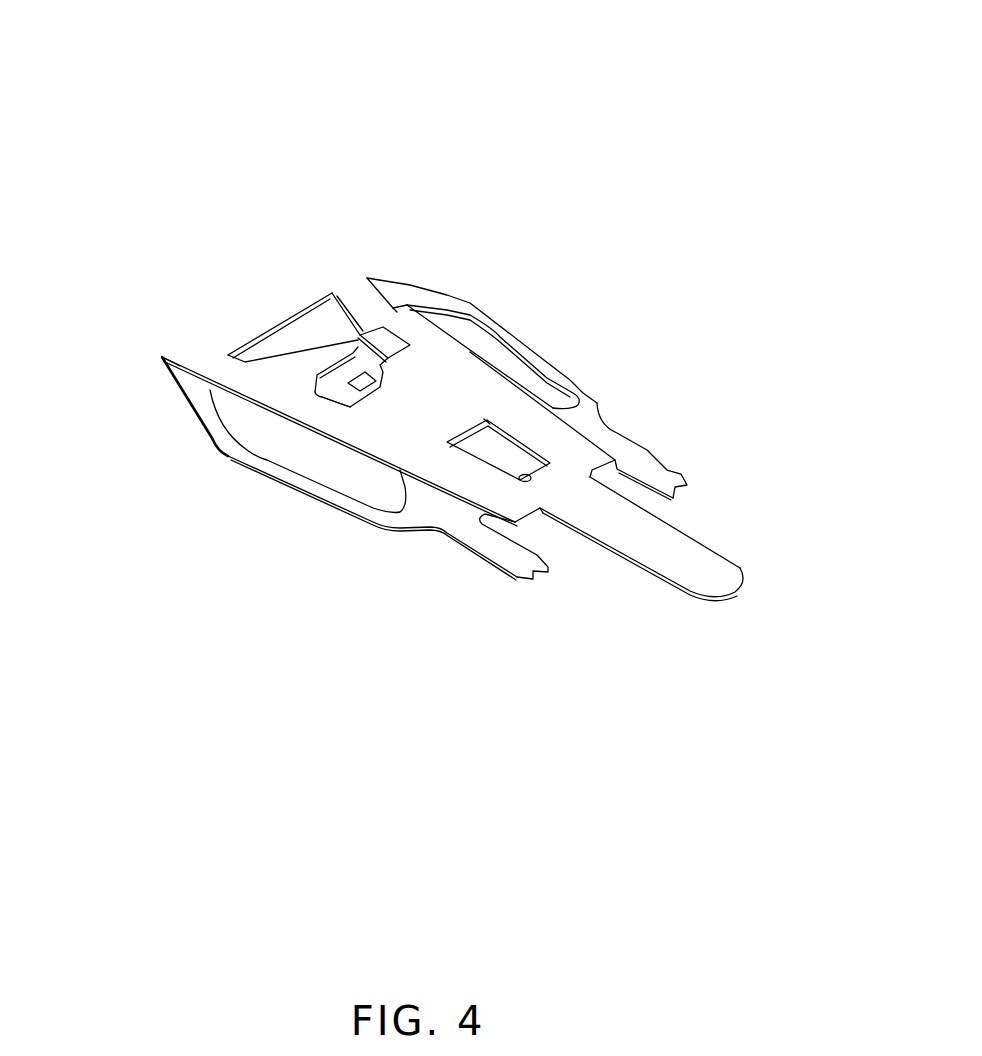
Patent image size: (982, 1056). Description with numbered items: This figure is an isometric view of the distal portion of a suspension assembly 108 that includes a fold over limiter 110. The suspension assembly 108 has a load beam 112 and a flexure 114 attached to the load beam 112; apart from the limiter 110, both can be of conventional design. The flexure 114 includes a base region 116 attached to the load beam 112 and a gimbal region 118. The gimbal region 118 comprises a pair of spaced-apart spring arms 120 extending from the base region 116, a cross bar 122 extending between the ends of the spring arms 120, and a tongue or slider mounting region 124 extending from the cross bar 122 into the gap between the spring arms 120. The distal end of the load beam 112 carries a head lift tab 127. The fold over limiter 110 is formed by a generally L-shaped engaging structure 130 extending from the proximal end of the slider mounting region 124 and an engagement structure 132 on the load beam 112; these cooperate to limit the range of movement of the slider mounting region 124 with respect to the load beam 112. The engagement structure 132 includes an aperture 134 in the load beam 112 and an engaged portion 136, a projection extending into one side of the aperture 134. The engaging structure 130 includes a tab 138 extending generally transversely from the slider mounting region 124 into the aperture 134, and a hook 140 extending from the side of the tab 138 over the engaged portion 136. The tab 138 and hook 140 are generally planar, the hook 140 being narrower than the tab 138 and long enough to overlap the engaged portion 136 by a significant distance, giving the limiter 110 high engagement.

The load beam 112 is at (312, 233).
The fold over limiter 110 is at (397, 310).
The hook 140 is at (390, 345).
The engagement structure 132 is at (400, 352).
The suspension assembly 108 is at (527, 282).
The engaged portion 136 is at (390, 367).
The spring arms 120 is at (190, 405).
The flexure 114 is at (598, 395).
The engaging structure 130 is at (290, 350).
The aperture 134 is at (353, 338).
The base region 116 is at (156, 359).
The tab 138 is at (335, 373).
The gimbal region 118 is at (233, 492).
The slider mounting region 124 is at (345, 400).
The cross bar 122 is at (447, 518).
The head lift tab 127 is at (690, 553).